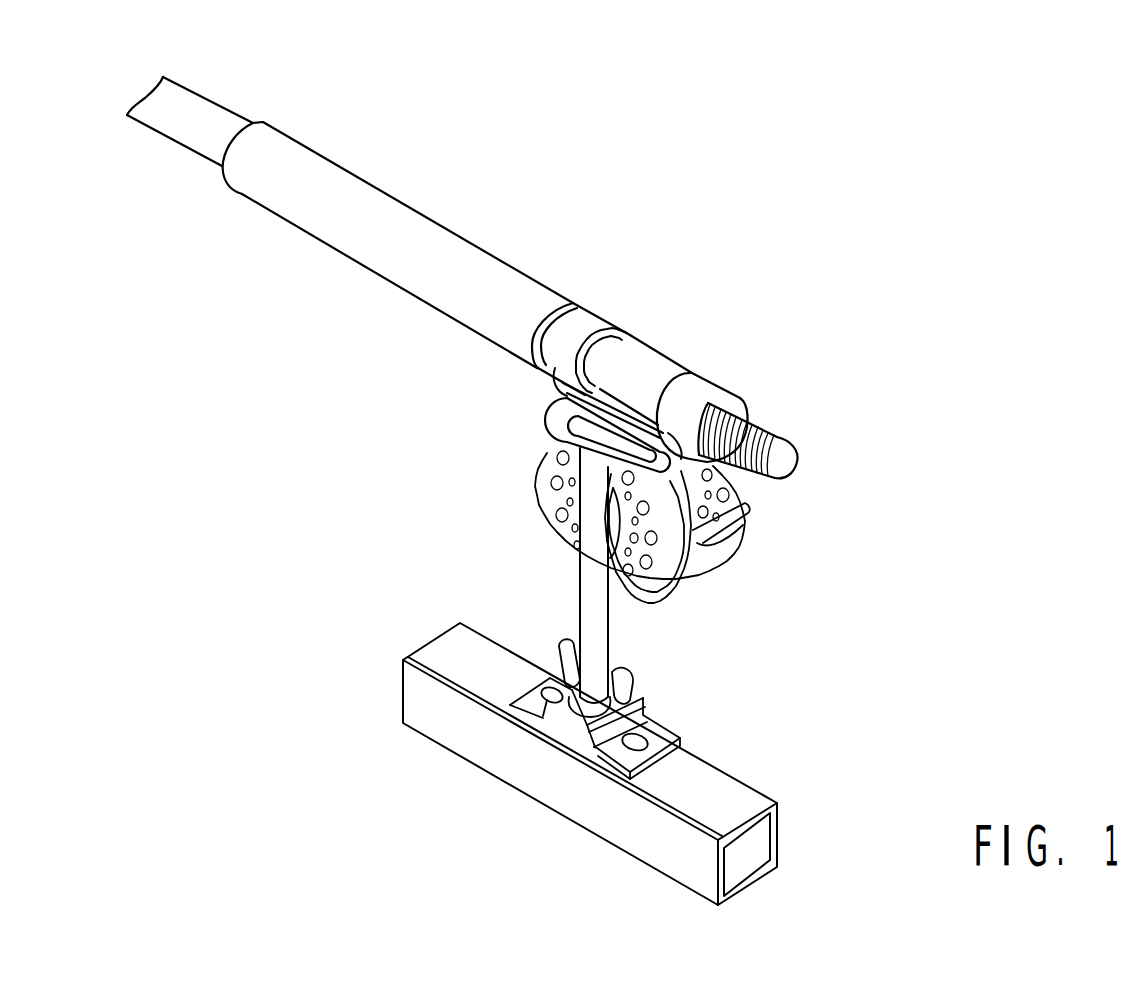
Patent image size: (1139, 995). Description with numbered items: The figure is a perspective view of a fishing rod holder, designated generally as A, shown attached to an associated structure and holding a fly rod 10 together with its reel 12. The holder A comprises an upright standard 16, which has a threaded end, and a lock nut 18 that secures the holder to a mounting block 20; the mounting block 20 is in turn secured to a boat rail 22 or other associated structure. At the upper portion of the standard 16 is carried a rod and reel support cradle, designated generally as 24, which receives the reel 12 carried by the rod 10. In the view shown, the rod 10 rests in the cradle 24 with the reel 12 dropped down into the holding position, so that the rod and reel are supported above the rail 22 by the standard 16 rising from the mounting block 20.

The fly rod 10 is at (192, 88).
The reel 12 is at (755, 532).
The standard 16 is at (610, 637).
The lock nut 18 is at (637, 682).
The mounting block 20 is at (679, 733).
The boat rail 22 is at (735, 777).
The rod and reel support cradle 24 is at (540, 422).
The fishing rod holder A is at (540, 397).